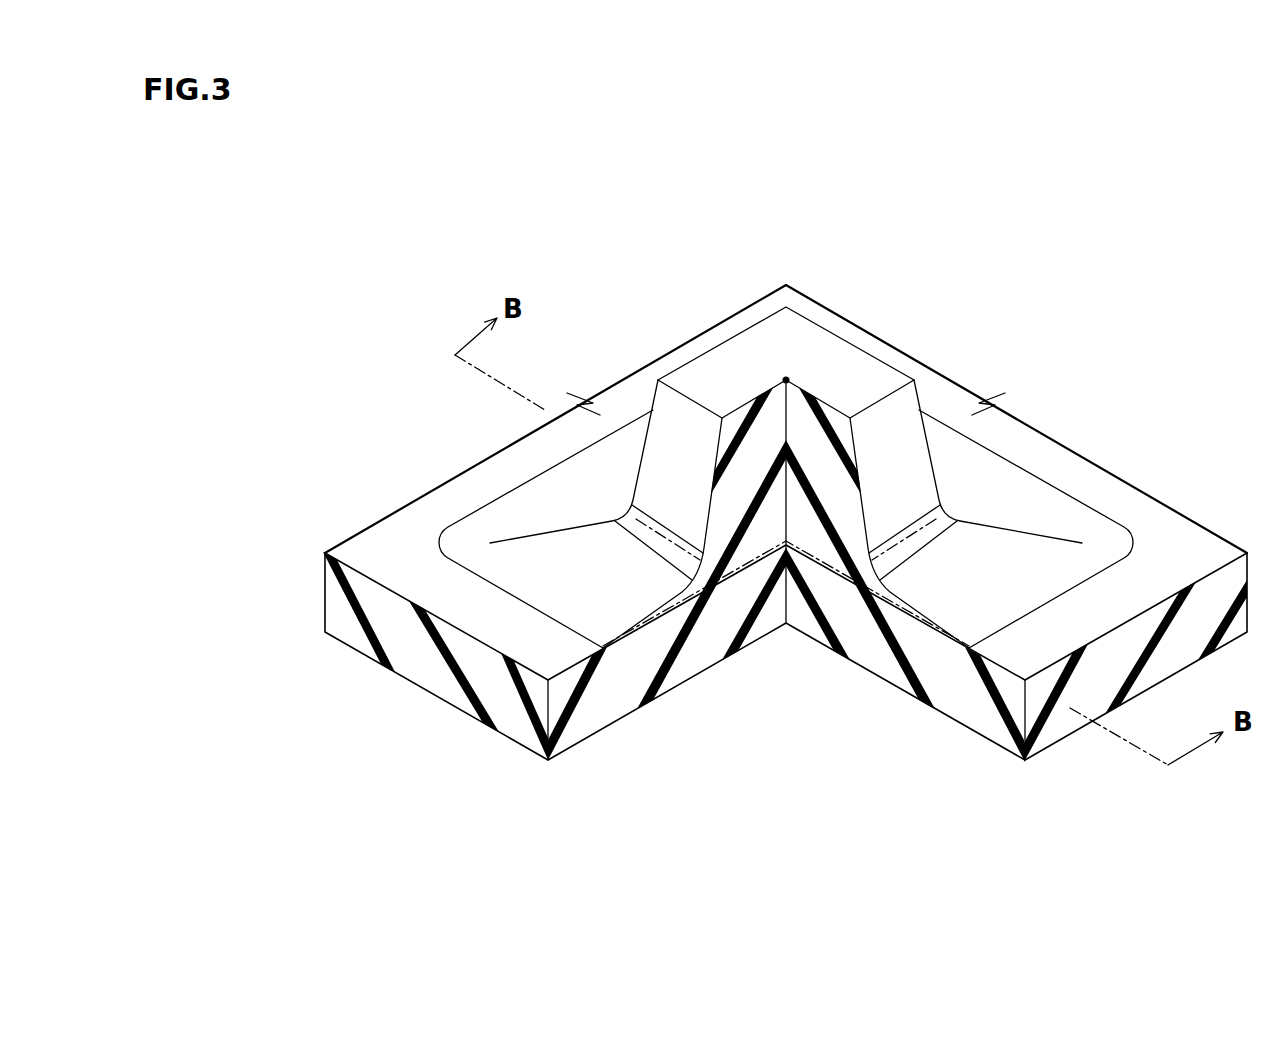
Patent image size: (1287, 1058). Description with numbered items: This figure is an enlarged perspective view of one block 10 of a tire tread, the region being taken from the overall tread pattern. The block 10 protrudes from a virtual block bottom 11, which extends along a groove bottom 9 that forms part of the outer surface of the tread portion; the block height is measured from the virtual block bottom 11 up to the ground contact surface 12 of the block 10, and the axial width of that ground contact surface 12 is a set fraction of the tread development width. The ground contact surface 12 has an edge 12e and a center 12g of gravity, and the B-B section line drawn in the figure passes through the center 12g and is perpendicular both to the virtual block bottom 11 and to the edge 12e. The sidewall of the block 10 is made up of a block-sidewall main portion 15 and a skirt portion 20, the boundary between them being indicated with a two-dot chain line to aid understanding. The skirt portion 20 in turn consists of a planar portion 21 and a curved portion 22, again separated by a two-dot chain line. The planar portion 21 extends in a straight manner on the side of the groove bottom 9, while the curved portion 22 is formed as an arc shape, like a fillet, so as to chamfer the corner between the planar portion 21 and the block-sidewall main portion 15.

The groove bottom 9 is at (440, 590).
The block 10 is at (624, 387).
The virtual block bottom 11 is at (783, 547).
The ground contact surface 12 is at (739, 413).
The edge of the ground contact surface 12e is at (720, 342).
The center of gravity of the ground contact surface 12g is at (786, 376).
The block-sidewall main portion 15 is at (677, 457).
The skirt portion 20 is at (716, 522).
The planar portion 21 is at (568, 573).
The curved portion 22 is at (634, 531).